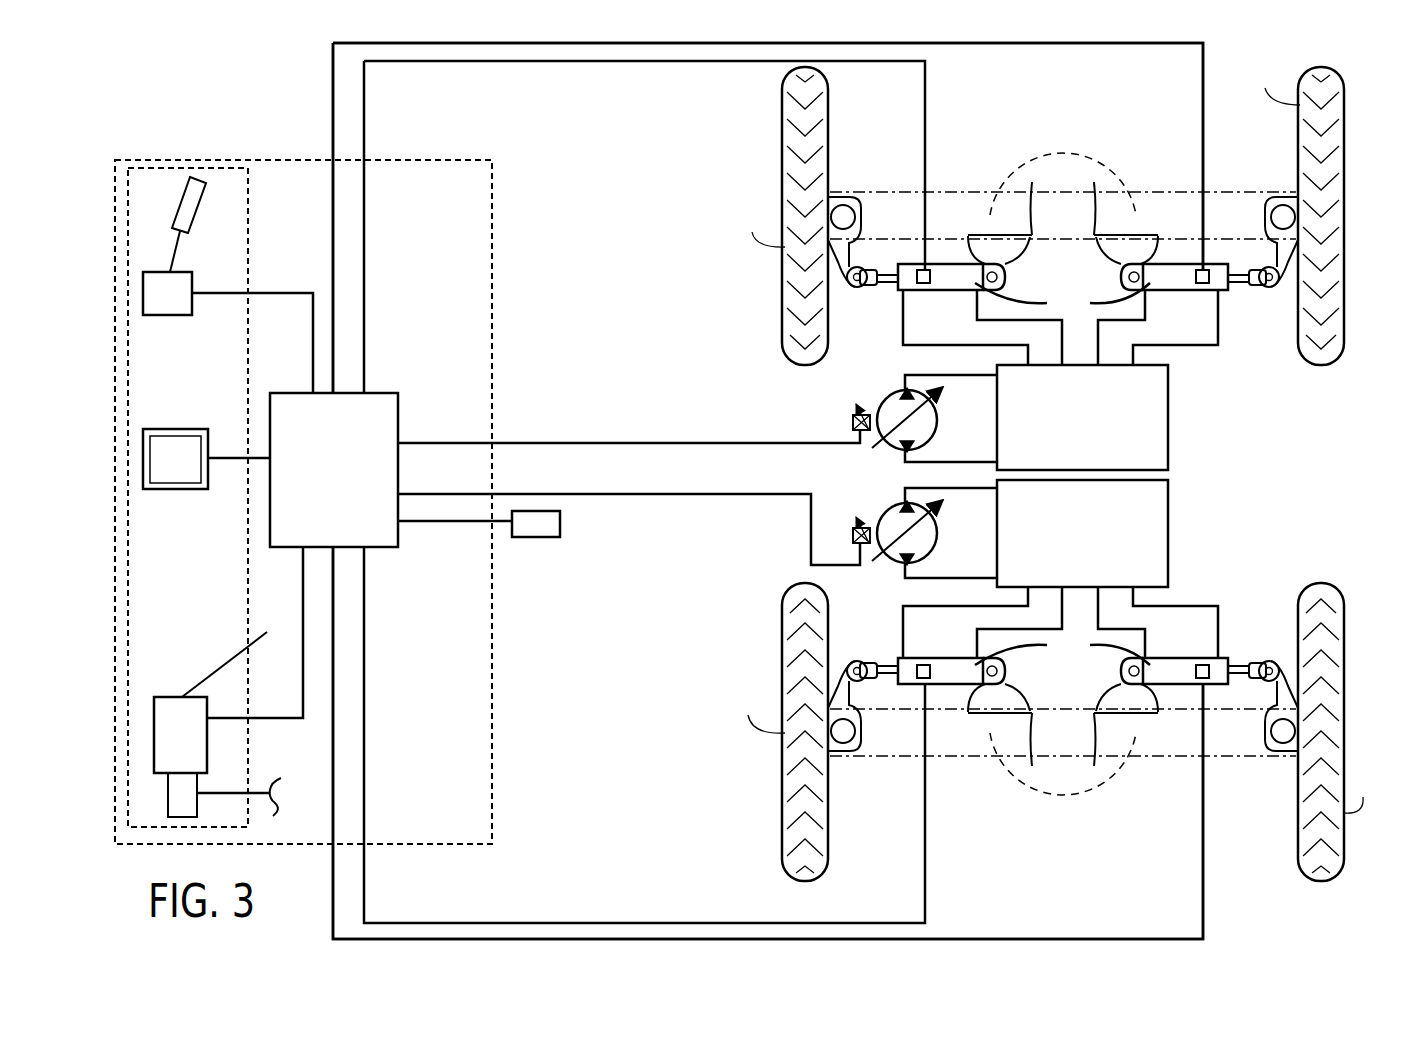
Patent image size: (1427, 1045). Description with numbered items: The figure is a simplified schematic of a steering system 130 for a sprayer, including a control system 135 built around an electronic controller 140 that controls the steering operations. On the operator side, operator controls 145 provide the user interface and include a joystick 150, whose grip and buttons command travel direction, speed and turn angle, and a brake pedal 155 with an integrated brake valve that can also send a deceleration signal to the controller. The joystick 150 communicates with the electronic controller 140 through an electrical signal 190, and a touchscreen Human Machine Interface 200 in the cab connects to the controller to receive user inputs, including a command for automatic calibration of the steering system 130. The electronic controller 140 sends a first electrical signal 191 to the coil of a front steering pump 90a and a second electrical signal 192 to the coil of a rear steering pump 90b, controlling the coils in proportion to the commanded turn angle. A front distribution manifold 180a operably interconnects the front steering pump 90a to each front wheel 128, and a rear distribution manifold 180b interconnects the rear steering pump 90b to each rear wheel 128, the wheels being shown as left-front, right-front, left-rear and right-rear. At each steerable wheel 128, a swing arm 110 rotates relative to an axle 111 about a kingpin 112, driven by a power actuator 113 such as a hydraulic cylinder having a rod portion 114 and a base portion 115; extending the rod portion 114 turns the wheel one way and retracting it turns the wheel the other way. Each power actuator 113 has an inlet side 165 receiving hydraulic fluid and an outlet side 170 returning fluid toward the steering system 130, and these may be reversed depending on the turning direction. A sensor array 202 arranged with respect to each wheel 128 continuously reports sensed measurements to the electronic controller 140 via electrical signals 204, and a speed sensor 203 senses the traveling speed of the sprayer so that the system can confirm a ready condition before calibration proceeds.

The front steering pump 90a is at (843, 403).
The rear steering pump 90b is at (843, 535).
The swing arm 110 is at (836, 270).
The axle 111 is at (1063, 472).
The kingpin 112 is at (845, 204).
The power actuator 113 is at (938, 262).
The rod portion 114 is at (893, 280).
The base portion 115 is at (1062, 474).
The wheel 128 is at (790, 88).
The steering system 130 is at (297, 68).
The control system 135 is at (312, 148).
The electronic controller 140 is at (405, 410).
The operator controls 145 is at (272, 275).
The joystick 150 is at (263, 188).
The brake pedal 155 is at (167, 622).
The inlet side 165 is at (912, 346).
The outlet side 170 is at (970, 306).
The front distribution manifold 180a is at (1197, 443).
The rear distribution manifold 180b is at (1197, 515).
The electrical signal 190 is at (235, 294).
The first electrical signal 191 is at (570, 443).
The second electrical signal 192 is at (705, 496).
The Human Machine Interface 200 is at (143, 458).
The sensor array 202 is at (917, 268).
The speed sensor 203 is at (548, 537).
The electrical signals 204 is at (927, 92).